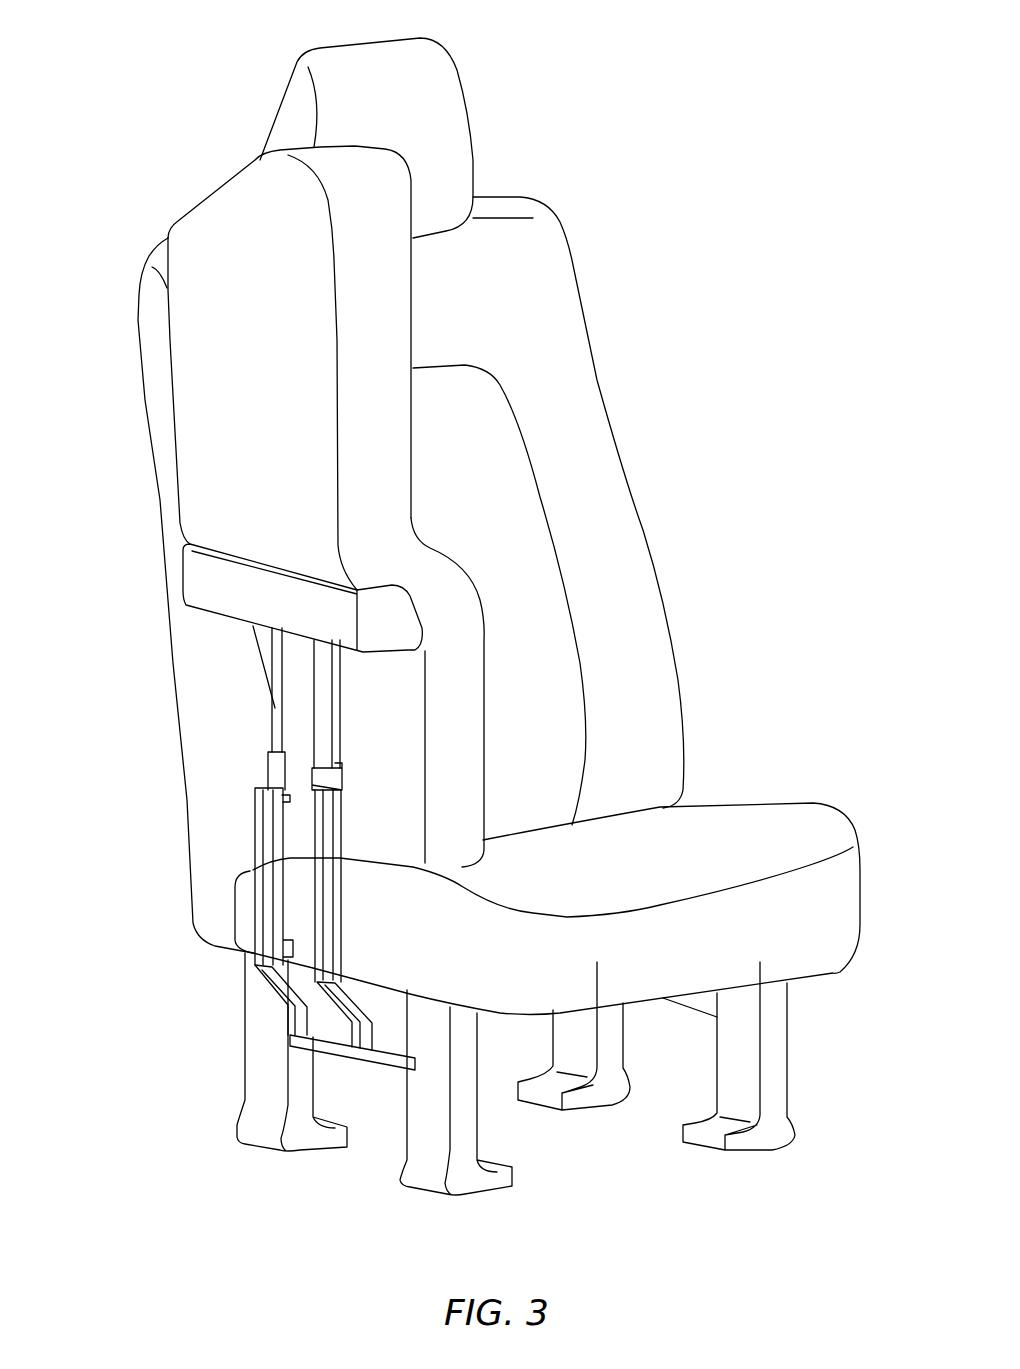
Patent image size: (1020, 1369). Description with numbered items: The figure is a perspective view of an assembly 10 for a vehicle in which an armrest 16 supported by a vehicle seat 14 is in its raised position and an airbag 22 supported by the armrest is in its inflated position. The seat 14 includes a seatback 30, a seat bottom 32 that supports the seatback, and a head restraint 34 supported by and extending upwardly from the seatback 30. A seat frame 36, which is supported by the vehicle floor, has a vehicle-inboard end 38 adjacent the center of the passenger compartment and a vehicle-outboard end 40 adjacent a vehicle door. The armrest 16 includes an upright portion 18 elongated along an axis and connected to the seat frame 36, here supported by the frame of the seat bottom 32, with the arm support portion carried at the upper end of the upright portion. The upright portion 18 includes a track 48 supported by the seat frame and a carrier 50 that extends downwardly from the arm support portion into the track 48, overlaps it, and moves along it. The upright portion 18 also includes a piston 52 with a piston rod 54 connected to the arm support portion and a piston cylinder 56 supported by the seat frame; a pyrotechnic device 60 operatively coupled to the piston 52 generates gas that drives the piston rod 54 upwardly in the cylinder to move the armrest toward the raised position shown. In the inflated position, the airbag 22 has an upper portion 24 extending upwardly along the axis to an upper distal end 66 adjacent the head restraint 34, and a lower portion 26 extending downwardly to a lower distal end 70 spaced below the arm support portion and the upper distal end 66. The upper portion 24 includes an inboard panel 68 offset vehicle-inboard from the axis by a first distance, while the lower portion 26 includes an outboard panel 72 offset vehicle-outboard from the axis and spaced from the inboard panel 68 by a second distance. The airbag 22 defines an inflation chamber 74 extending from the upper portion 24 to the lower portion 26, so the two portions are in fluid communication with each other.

The assembly 10 is at (760, 96).
The vehicle seat 14 is at (622, 424).
The armrest 16 is at (172, 565).
The upright portion 18 is at (238, 850).
The airbag 22 is at (422, 477).
The upper portion 24 is at (187, 191).
The lower portion 26 is at (502, 715).
The seatback 30 is at (543, 258).
The seat bottom 32 is at (770, 823).
The head restraint 34 is at (450, 120).
The seat frame 36 is at (798, 1076).
The vehicle-inboard end 38 is at (400, 1043).
The vehicle-outboard end 40 is at (703, 1000).
The track 48 is at (330, 953).
The carrier 50 is at (333, 710).
The piston 52 is at (243, 695).
The piston rod 54 is at (273, 712).
The piston cylinder 56 is at (276, 772).
The pyrotechnic device 60 is at (283, 957).
The upper distal end 66 is at (340, 147).
The inboard panel 68 is at (220, 375).
The lower distal end 70 is at (467, 868).
The outboard panel 72 is at (485, 657).
The inflation chamber 74 is at (388, 333).